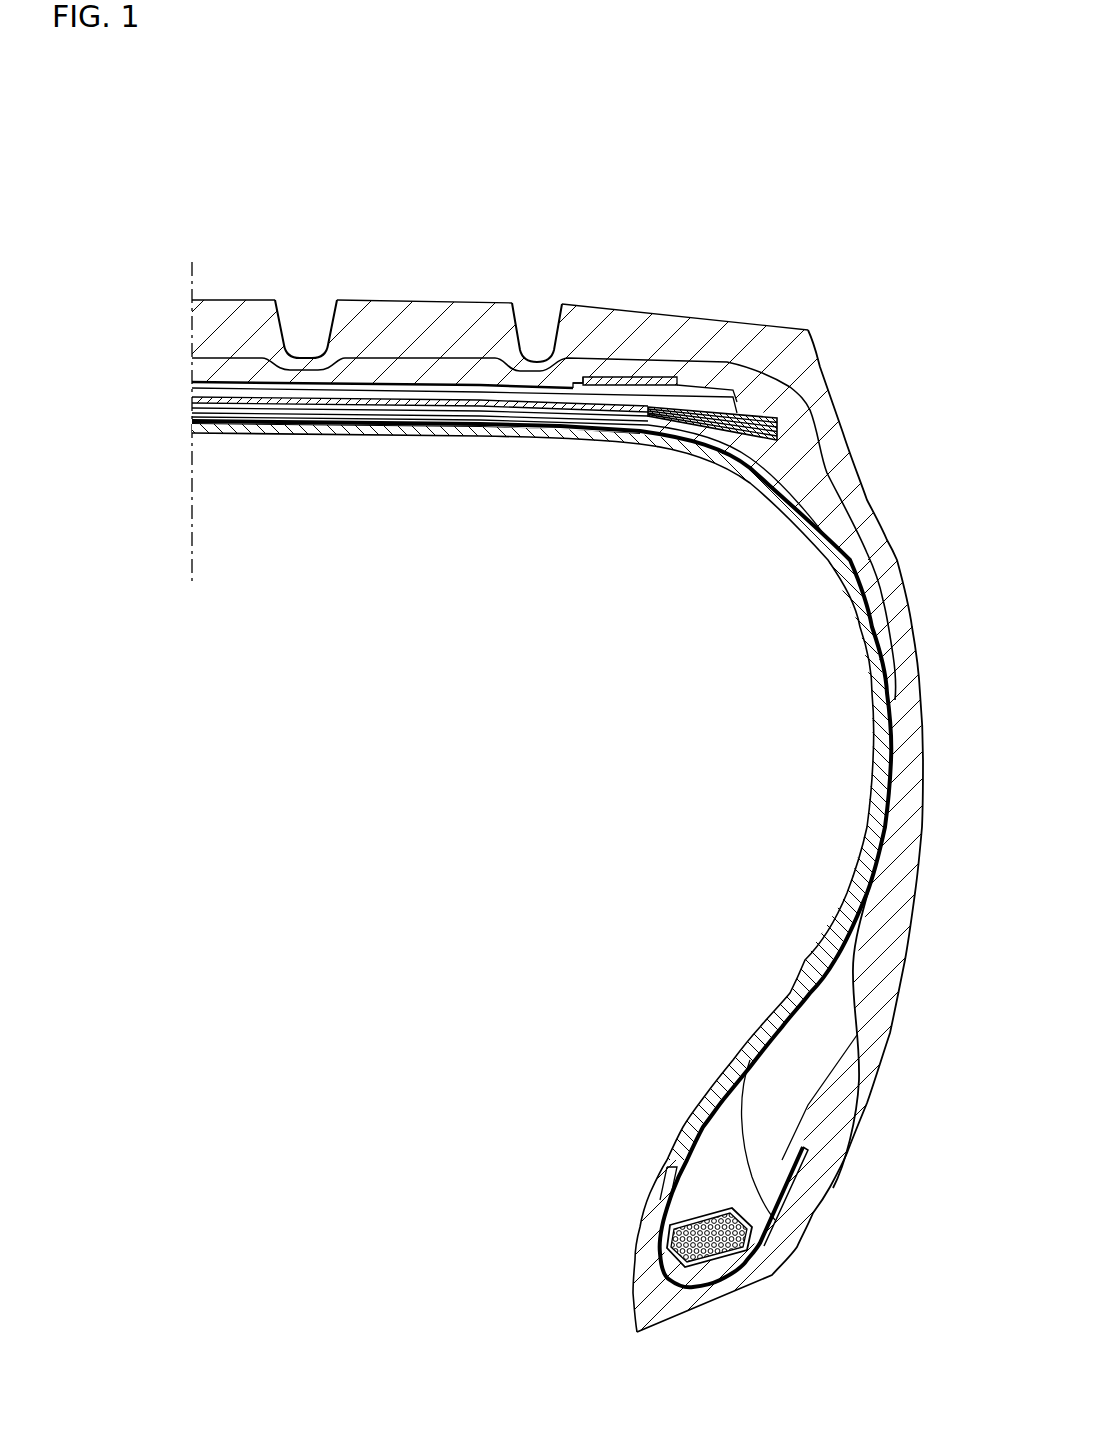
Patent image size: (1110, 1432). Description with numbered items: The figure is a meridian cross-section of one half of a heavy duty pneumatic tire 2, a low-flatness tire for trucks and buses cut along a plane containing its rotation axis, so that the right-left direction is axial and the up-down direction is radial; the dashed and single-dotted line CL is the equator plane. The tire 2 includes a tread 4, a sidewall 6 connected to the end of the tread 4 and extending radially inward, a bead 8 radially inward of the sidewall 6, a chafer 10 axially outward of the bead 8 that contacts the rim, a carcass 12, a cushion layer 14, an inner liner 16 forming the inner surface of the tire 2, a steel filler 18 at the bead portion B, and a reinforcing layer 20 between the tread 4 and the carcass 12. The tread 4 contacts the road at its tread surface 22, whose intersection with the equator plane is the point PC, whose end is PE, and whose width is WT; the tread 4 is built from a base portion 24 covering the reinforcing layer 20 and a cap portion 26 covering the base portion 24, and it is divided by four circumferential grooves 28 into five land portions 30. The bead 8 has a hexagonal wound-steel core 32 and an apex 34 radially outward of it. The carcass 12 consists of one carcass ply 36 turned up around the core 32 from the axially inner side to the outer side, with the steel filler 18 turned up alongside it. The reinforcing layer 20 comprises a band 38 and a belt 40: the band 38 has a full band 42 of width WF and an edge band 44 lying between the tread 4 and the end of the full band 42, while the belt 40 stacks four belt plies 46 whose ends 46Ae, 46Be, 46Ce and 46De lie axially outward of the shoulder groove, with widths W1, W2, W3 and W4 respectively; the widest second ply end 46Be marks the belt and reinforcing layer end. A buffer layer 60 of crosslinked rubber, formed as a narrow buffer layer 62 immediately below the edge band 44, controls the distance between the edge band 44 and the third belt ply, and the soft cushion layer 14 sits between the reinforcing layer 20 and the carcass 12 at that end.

The heavy duty pneumatic tire 2 is at (868, 212).
The tread 4 is at (761, 311).
The sidewall 6 is at (890, 620).
The bead 8 is at (505, 1092).
The chafer 10 is at (800, 1228).
The carcass 12 is at (490, 428).
The cushion layer 14 is at (802, 492).
The inner liner 16 is at (534, 452).
The steel filler 18 is at (780, 1188).
The reinforcing layer 20 is at (222, 430).
The tread surface 22 is at (388, 300).
The base portion 24 is at (196, 380).
The cap portion 26 is at (262, 318).
The circumferential groove 28 is at (528, 332).
The land portion 30 is at (447, 262).
The core 32 is at (668, 1252).
The apex 34 is at (763, 1130).
The carcass ply 36 is at (810, 967).
The band 38 is at (640, 522).
The belt 40 is at (245, 522).
The full band 42 is at (570, 402).
The edge band 44 is at (614, 395).
The belt ply 46 is at (278, 423).
The end of the first belt ply 46Ae is at (825, 478).
The end of the second belt ply 46Be is at (943, 381).
The end of the third belt ply 46Ce is at (785, 398).
The end of the fourth belt ply 46De is at (630, 385).
The buffer layer 60 is at (645, 370).
The narrow buffer layer 62 is at (655, 375).
The point of intersection PC is at (192, 298).
The end of the tread surface PE is at (808, 330).
The equator plane CL is at (192, 522).
The tread surface T is at (372, 288).
The bead portion B is at (708, 1040).
The width of the tread surface WT is at (808, 330).
The width of the first belt ply W1 is at (723, 661).
The width of the second belt ply W2 is at (775, 708).
The width of the third belt ply W3 is at (735, 656).
The width of the fourth belt ply W4 is at (585, 383).
The width of the full band WF is at (647, 602).